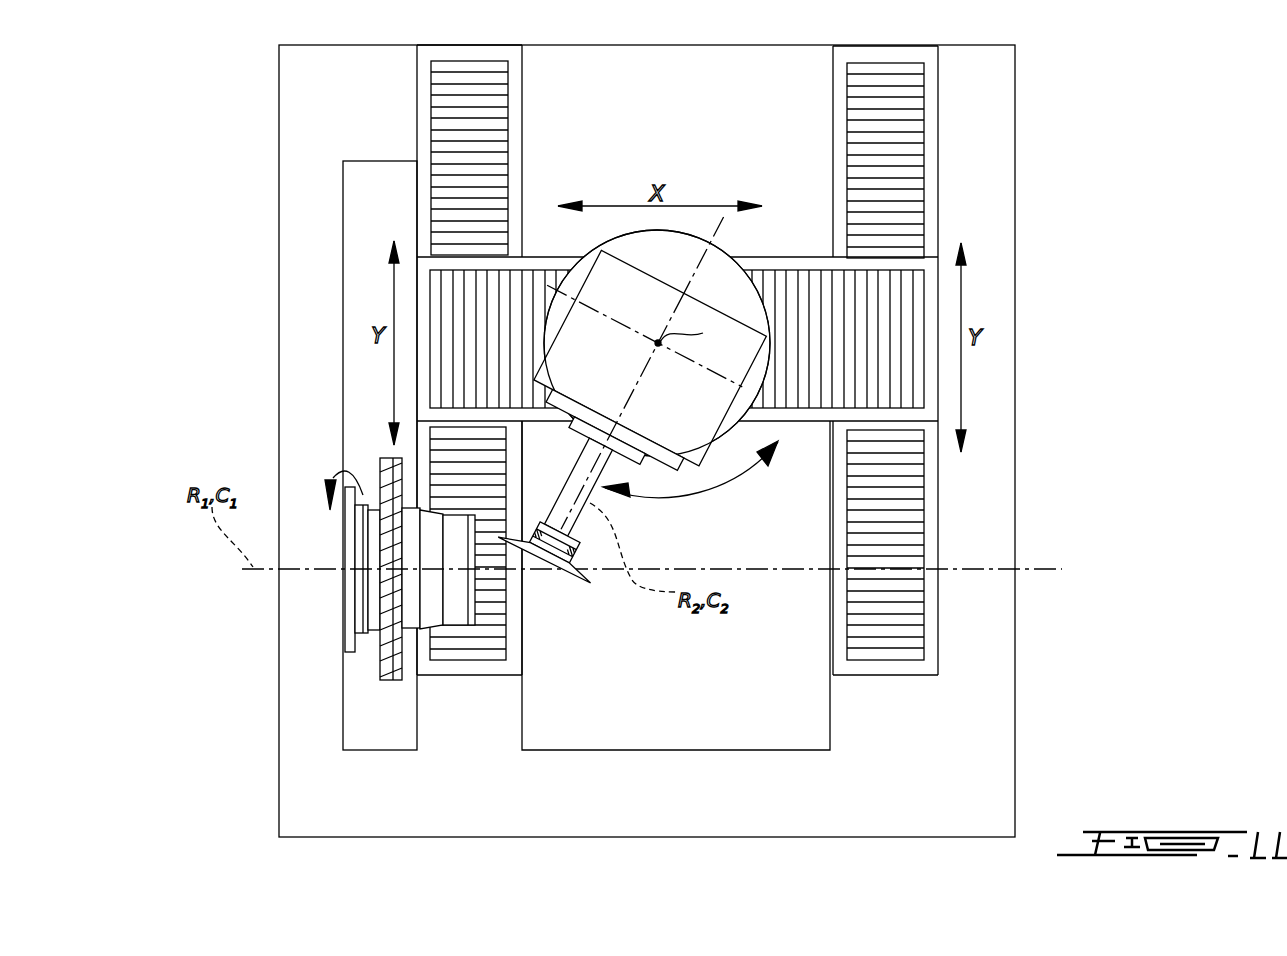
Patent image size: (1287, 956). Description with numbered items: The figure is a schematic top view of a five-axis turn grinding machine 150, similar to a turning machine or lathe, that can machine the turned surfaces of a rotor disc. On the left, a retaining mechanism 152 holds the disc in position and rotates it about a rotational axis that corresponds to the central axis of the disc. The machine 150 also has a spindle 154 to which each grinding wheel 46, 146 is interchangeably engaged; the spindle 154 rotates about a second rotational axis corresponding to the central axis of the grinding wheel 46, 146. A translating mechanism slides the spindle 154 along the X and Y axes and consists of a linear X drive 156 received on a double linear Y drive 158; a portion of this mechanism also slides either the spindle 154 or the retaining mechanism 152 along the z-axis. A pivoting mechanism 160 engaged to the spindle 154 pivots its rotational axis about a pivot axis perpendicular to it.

The turn grinding machine 150 is at (160, 102).
The retaining mechanism 152 is at (355, 568).
The spindle 154 is at (587, 502).
The linear X drive 156 is at (930, 303).
The double linear Y drive 158 is at (840, 80).
The pivoting mechanism 160 is at (680, 248).
The grinding wheel 46 is at (590, 583).
The grinding wheel 146 is at (575, 601).